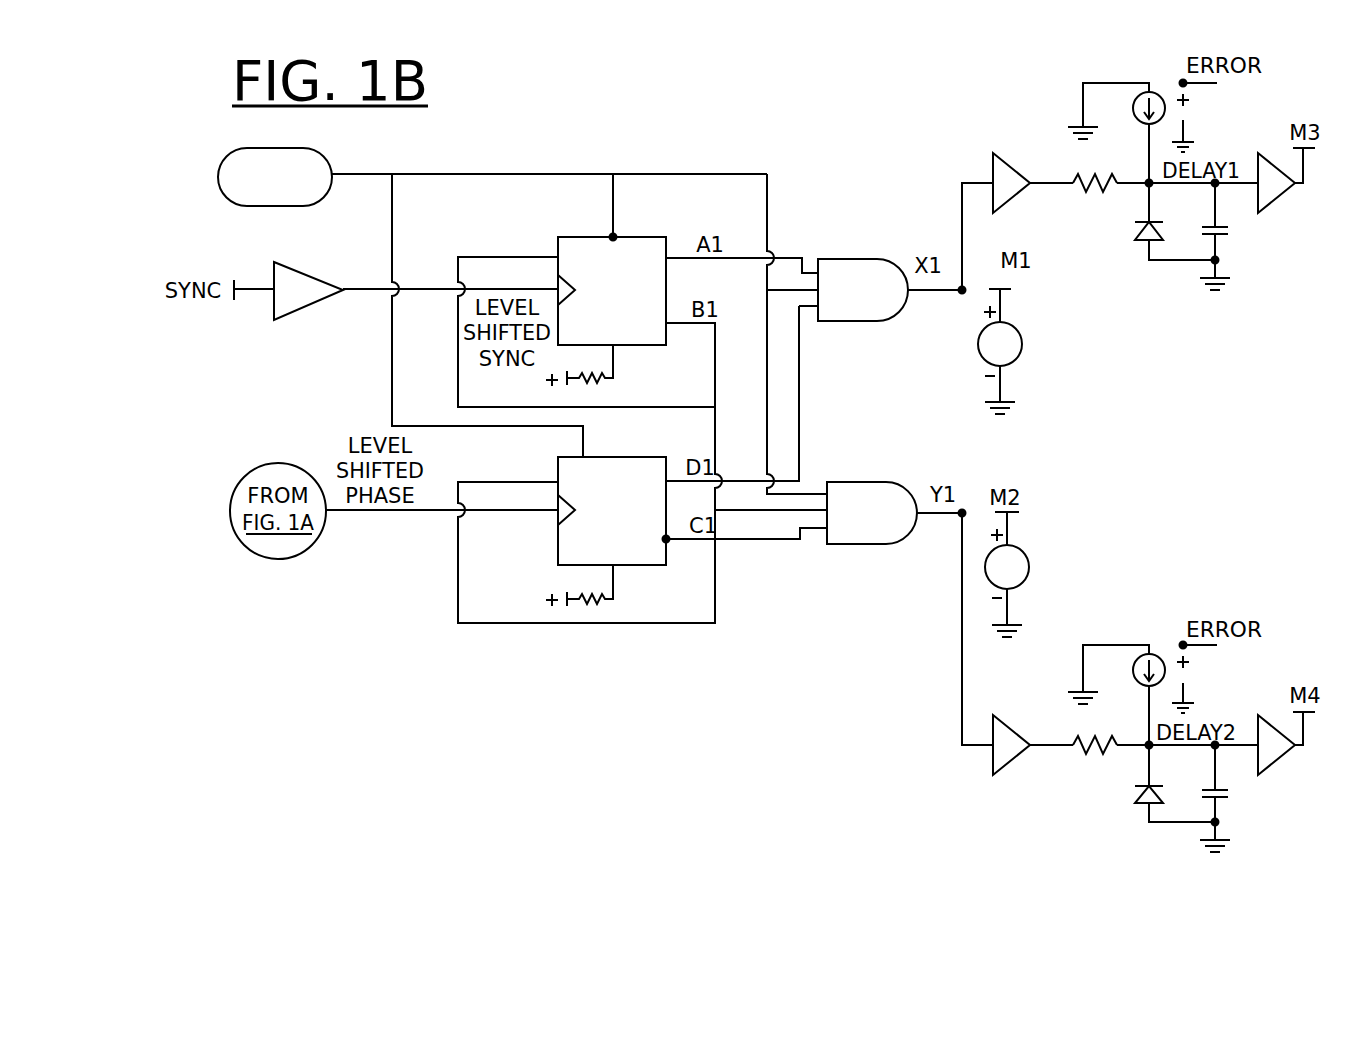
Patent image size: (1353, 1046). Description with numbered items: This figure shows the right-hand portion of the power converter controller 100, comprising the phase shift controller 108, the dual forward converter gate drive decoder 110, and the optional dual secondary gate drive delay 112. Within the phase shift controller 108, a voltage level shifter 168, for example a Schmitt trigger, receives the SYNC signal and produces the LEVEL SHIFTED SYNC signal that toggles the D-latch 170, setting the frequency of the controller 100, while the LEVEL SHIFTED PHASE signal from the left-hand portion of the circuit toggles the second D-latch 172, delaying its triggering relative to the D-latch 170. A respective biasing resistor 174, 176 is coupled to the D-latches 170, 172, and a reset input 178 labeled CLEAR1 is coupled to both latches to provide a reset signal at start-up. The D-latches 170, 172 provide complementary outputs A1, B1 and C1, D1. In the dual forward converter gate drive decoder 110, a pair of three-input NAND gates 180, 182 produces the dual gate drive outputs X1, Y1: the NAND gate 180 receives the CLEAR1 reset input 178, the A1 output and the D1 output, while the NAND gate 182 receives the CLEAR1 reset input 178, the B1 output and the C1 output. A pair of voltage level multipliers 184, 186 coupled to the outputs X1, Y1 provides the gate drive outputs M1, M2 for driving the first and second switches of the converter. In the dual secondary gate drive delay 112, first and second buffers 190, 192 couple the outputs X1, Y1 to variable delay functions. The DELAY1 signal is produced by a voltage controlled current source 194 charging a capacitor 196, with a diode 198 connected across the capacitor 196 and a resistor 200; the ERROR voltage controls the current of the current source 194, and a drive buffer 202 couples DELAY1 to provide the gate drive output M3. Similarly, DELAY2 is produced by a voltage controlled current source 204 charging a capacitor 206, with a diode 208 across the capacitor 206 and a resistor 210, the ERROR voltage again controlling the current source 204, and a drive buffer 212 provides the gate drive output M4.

The power converter controller 100 is at (734, 85).
The phase shift controller 108 is at (605, 162).
The dual forward converter gate drive decoder 110 is at (1009, 467).
The dual secondary gate drive delay 112 is at (1188, 907).
The voltage level shifter 168 is at (308, 291).
The D-latch 170 is at (612, 291).
The D-latch 172 is at (612, 511).
The biasing resistor 174 is at (579, 365).
The biasing resistor 176 is at (579, 585).
The reset input 178 is at (275, 177).
The NAND gate 180 is at (863, 290).
The NAND gate 182 is at (872, 513).
The voltage level multiplier 184 is at (1022, 351).
The voltage level multiplier 186 is at (1029, 574).
The first buffer 190 is at (1021, 186).
The second buffer 192 is at (1007, 761).
The voltage controlled current source 194 is at (1116, 133).
The capacitor 196 is at (1234, 236).
The diode 198 is at (1153, 221).
The resistor 200 is at (1095, 170).
The drive buffer 202 is at (1285, 187).
The voltage controlled current source 204 is at (1116, 695).
The capacitor 206 is at (1234, 798).
The diode 208 is at (1153, 783).
The resistor 210 is at (1095, 732).
The drive buffer 212 is at (1291, 746).